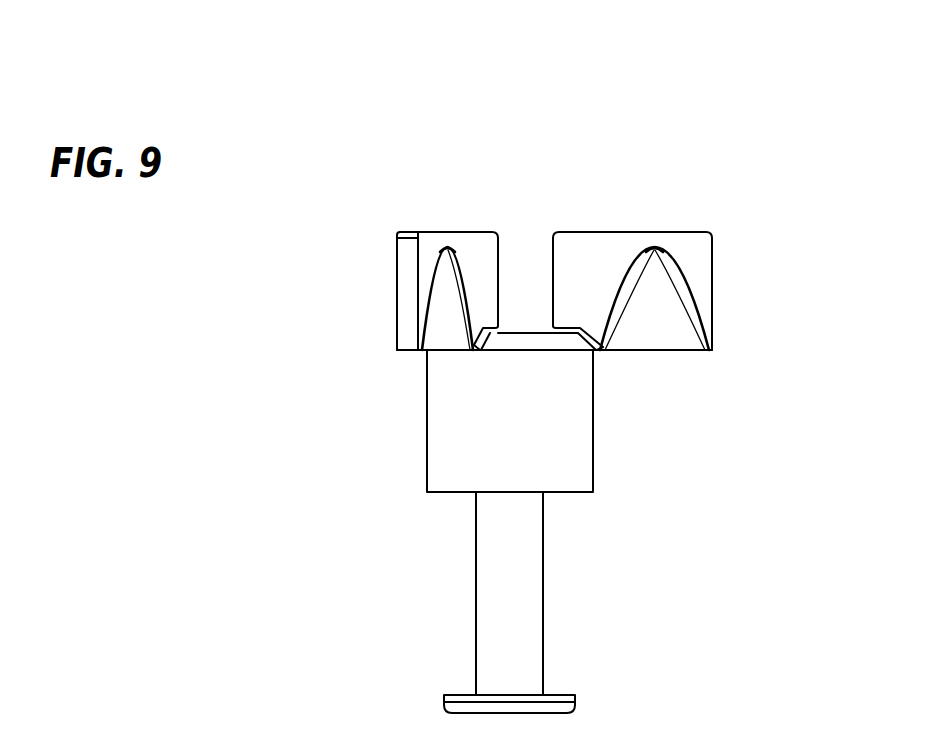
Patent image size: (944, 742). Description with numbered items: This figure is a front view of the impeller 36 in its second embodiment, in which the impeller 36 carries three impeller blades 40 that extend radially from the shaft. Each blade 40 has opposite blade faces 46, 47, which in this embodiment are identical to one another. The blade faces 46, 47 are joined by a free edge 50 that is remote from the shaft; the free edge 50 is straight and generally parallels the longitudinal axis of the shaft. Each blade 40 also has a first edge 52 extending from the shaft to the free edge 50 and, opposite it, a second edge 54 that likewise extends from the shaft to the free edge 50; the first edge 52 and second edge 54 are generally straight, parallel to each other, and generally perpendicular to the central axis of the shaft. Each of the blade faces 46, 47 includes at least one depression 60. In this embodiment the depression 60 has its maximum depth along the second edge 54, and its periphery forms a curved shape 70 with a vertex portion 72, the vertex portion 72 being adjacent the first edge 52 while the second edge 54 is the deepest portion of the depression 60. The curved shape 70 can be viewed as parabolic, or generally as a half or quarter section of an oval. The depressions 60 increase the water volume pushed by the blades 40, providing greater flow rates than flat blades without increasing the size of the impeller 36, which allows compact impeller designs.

The impeller 36 is at (714, 150).
The impeller blade 40 is at (400, 197).
The blade face 46 is at (693, 245).
The blade face 47 is at (490, 257).
The free edge 50 is at (403, 307).
The first edge 52 is at (462, 230).
The second edge 54 is at (674, 350).
The depression 60 is at (434, 340).
The curved shape 70 is at (423, 308).
The vertex portion 72 is at (445, 242).